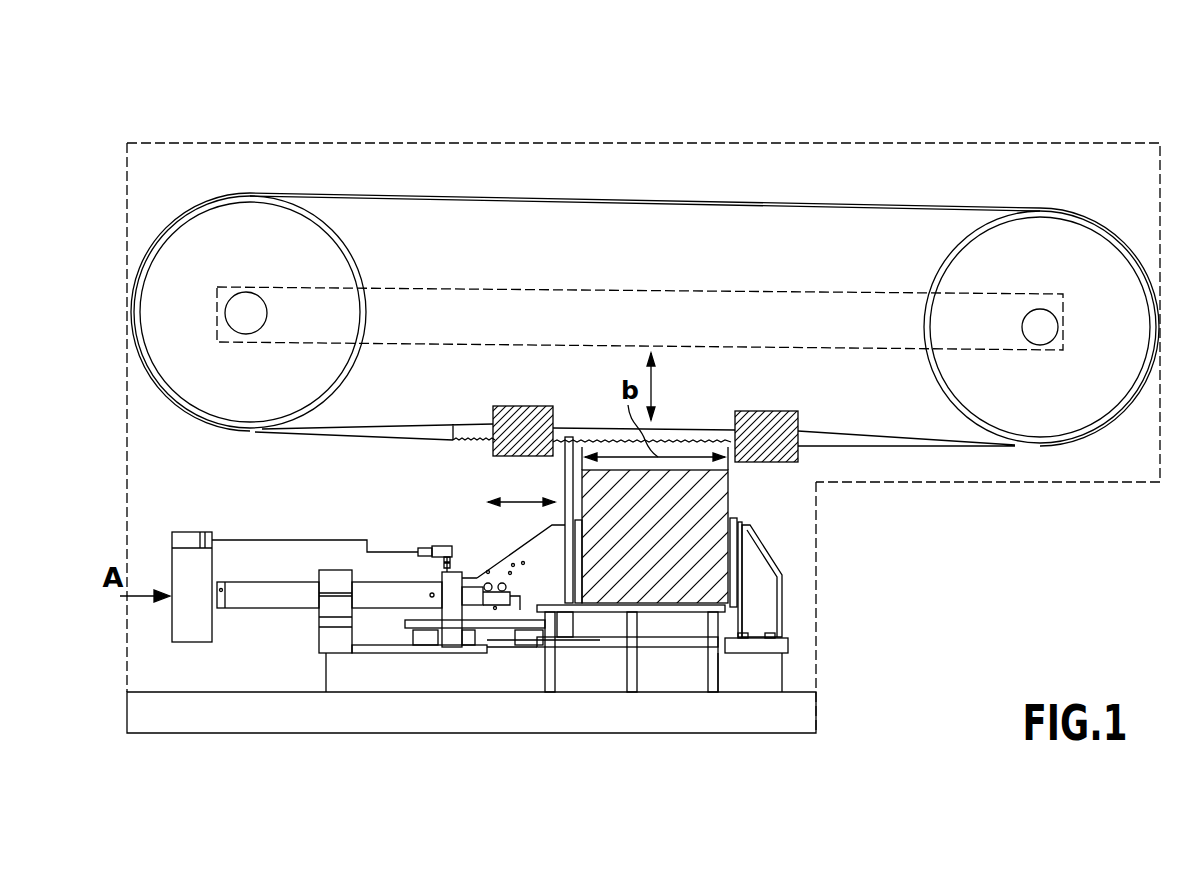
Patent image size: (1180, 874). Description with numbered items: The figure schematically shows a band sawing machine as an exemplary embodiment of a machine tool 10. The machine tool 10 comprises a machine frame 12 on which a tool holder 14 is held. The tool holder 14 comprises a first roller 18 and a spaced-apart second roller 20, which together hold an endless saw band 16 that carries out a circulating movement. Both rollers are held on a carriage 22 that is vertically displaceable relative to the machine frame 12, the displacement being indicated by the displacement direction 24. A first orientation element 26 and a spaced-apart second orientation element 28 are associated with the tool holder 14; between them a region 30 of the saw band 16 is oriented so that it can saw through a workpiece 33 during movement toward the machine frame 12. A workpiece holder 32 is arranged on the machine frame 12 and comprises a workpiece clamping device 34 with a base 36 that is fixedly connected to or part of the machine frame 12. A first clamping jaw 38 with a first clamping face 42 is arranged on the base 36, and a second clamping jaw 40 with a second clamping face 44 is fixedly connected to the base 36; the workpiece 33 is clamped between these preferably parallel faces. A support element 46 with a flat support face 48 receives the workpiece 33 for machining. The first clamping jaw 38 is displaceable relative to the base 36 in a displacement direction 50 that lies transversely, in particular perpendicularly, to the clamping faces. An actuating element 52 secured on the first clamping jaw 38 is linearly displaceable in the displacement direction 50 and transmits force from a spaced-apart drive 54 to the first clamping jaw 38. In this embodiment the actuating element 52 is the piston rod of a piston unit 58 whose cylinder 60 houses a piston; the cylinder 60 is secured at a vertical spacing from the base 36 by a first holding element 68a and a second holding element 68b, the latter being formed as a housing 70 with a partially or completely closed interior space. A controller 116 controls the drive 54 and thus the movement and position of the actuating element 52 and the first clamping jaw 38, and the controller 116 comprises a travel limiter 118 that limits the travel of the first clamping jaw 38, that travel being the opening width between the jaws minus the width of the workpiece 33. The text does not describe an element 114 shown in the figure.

The machine tool 10 is at (467, 130).
The machine frame 12 is at (800, 715).
The tool holder 14 is at (248, 185).
The saw band 16 is at (608, 198).
The first roller 18 is at (362, 333).
The second roller 20 is at (925, 333).
The carriage 22 is at (762, 300).
The displacement direction 24 is at (655, 383).
The first orientation element 26 is at (515, 447).
The second orientation element 28 is at (793, 463).
The region of the saw band 30 is at (683, 433).
The workpiece holder 32 is at (809, 632).
The workpiece 33 is at (725, 512).
The workpiece clamping device 34 is at (804, 593).
The base 36 is at (588, 668).
The first clamping jaw 38 is at (577, 570).
The second clamping jaw 40 is at (735, 592).
The first clamping face 42 is at (583, 530).
The second clamping face 44 is at (708, 483).
The support element 46 is at (678, 642).
The support face 48 is at (650, 640).
The displacement direction 50 is at (520, 500).
The actuating element 52 is at (468, 592).
The drive 54 is at (203, 630).
The piston unit 58 is at (264, 622).
The cylinder 60 is at (372, 597).
The first holding element 68a is at (333, 578).
The second holding element 68b is at (455, 548).
The housing 70 is at (447, 630).
The sensor block 114 is at (433, 540).
The controller 116 is at (187, 538).
The travel limiter 118 is at (208, 538).